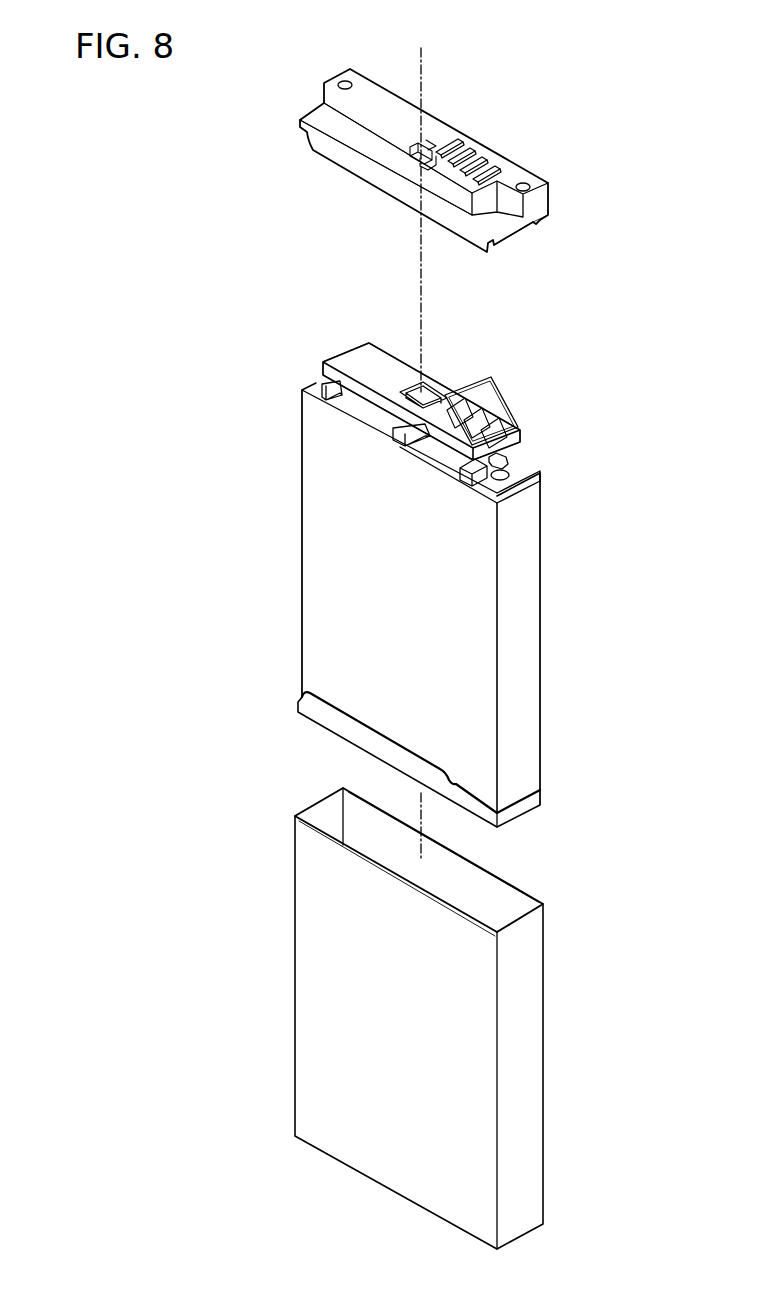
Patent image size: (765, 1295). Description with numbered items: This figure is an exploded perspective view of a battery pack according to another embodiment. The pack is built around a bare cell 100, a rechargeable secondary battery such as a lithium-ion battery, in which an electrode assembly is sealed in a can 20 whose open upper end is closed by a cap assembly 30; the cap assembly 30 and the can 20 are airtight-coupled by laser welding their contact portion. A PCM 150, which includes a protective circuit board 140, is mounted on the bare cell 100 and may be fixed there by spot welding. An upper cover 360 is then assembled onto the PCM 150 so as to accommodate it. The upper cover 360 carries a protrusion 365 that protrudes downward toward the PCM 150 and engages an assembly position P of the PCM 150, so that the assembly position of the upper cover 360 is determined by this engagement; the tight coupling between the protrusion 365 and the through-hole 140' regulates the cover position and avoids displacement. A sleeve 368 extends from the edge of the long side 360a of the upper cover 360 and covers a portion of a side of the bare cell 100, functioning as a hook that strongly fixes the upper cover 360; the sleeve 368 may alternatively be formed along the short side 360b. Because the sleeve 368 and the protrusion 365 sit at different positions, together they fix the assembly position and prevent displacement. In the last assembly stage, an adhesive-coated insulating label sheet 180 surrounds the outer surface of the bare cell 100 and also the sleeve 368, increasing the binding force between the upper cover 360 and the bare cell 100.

The can 20 is at (530, 587).
The cap assembly 30 is at (370, 418).
The bare cell 100 is at (550, 703).
The protective circuit board 140 is at (416, 371).
The through-hole 140' is at (455, 372).
The PCM 150 is at (313, 353).
The insulating label sheet 180 is at (537, 1082).
The upper cover 360 is at (483, 157).
The long side 360a is at (358, 142).
The short side 360b is at (518, 235).
The protrusion 365 is at (425, 143).
The sleeve 368 is at (377, 177).
The assembly position P is at (410, 358).